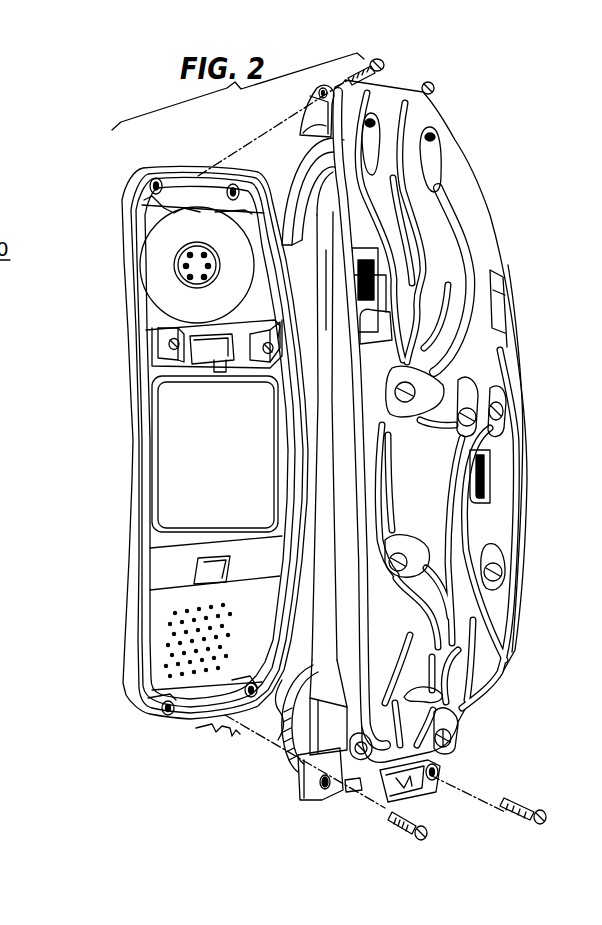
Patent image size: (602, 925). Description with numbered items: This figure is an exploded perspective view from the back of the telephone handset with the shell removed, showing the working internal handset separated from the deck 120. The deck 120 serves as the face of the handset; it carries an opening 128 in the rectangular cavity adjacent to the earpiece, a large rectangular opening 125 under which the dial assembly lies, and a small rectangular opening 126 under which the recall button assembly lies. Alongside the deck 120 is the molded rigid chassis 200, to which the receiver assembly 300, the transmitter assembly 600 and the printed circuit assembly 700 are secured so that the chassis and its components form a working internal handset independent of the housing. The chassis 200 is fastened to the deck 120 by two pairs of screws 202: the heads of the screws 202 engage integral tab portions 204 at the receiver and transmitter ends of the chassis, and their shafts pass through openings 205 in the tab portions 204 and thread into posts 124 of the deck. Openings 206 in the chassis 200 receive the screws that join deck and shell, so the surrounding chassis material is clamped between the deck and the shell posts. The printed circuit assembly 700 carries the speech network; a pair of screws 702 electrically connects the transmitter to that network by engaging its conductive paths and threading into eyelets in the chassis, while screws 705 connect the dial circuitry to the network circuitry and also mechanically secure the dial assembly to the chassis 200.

The deck 120 is at (130, 410).
The posts 124 is at (158, 190).
The large rectangular opening 125 is at (160, 442).
The small rectangular opening 126 is at (210, 556).
The opening 128 is at (224, 378).
The chassis 200 is at (332, 486).
The screws 202 is at (410, 72).
The tab portions 204 is at (300, 100).
The openings 205 is at (318, 92).
The openings 206 is at (370, 286).
The receiver assembly 300 is at (290, 162).
The transmitter assembly 600 is at (290, 752).
The printed circuit assembly 700 is at (516, 144).
The screws 702 is at (452, 744).
The screws 705 is at (506, 414).